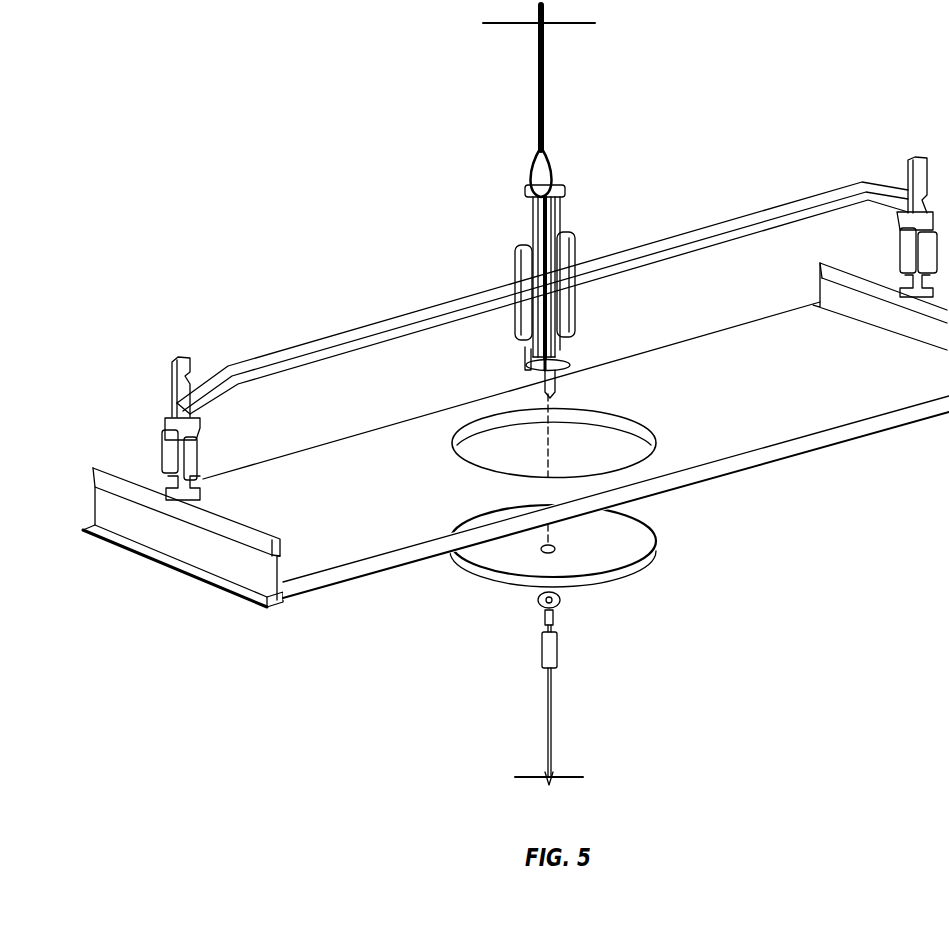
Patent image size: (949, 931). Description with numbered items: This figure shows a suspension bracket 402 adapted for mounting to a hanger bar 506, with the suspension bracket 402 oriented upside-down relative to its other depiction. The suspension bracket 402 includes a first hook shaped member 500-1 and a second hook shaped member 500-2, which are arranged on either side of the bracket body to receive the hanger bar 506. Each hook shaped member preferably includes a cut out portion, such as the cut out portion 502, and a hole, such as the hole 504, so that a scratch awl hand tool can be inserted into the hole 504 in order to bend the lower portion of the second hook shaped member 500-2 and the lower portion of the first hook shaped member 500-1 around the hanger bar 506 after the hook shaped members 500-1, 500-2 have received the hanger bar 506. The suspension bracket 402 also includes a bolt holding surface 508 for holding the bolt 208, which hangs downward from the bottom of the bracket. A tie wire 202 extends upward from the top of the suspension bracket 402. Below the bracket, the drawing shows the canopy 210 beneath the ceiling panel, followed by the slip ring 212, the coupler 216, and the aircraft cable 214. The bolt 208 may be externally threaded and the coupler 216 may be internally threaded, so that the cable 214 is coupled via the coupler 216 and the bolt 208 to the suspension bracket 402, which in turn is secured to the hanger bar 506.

The tie wire 202 is at (546, 86).
The suspension bracket 402 is at (528, 208).
The first hook shaped member 500-1 is at (532, 244).
The second hook shaped member 500-2 is at (567, 229).
The cut out portion 502 is at (572, 262).
The hole 504 is at (574, 270).
The hanger bar 506 is at (316, 338).
The bolt holding surface 508 is at (565, 358).
The bolt 208 is at (545, 386).
The canopy 210 is at (655, 542).
The slip ring 212 is at (540, 600).
The aircraft cable 214 is at (555, 618).
The coupler 216 is at (558, 652).